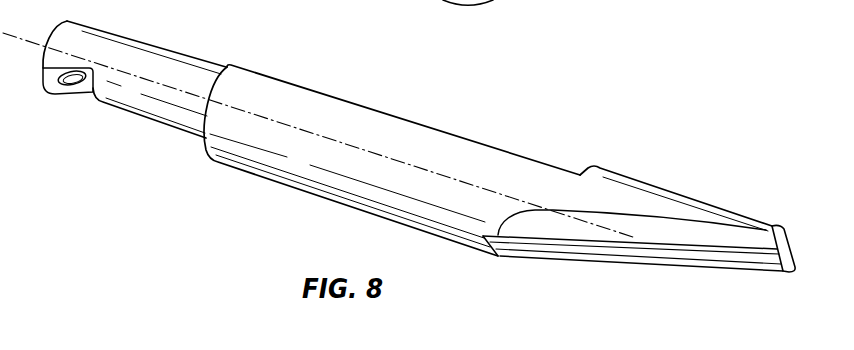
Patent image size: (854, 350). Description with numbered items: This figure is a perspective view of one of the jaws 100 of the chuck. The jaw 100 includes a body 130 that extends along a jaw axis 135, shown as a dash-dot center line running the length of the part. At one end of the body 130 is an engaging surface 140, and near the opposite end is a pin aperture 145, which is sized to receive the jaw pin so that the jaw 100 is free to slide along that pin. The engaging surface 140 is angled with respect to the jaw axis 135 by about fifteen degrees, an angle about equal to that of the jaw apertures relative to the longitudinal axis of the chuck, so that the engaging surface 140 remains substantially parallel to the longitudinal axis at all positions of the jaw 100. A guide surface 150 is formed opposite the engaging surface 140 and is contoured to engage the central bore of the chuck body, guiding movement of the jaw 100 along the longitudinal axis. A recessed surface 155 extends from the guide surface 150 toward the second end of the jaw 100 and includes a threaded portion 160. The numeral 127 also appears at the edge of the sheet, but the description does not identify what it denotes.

The jaw 100 is at (663, 138).
The body 130 is at (393, 151).
The jaw axis 135 is at (141, 80).
The engaging surface 140 is at (563, 254).
The pin aperture 145 is at (75, 86).
The guide surface 150 is at (793, 230).
The recessed surface 155 is at (262, 67).
The threaded portion 160 is at (530, 162).
The reference numeral of adjacent figure (cut off) 127 is at (347, 6).